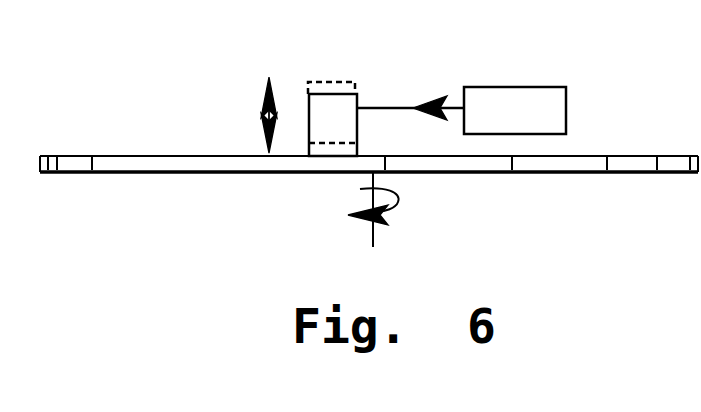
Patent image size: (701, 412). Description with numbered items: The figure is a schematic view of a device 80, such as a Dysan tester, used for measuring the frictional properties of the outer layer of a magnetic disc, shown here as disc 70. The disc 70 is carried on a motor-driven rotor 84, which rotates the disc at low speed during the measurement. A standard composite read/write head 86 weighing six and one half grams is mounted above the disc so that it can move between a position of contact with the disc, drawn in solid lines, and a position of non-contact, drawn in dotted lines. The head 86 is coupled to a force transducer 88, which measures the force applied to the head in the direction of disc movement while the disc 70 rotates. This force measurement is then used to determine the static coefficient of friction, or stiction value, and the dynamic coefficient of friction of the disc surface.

The disc 70 is at (175, 168).
The device 80 is at (393, 67).
The motor-driven rotor 84 is at (373, 230).
The composite read/write head 86 is at (318, 102).
The force transducer 88 is at (567, 103).